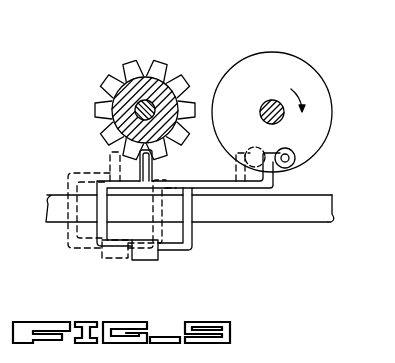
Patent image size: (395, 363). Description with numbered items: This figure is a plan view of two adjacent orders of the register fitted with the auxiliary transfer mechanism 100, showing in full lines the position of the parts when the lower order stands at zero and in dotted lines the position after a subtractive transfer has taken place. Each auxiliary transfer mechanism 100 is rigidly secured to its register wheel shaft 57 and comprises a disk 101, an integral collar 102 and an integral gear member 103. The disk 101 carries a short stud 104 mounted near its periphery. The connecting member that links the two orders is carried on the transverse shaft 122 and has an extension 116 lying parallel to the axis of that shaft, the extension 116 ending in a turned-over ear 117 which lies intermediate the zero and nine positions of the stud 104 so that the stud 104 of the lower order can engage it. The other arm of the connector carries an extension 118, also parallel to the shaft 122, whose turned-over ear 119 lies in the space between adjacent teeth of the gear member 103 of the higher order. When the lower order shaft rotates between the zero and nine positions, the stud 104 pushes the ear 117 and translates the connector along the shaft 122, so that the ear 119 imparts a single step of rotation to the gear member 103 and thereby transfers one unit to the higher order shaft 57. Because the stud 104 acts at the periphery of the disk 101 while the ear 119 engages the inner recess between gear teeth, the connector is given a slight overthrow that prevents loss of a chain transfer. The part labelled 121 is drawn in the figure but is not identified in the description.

The register wheel shaft 57 is at (145, 108).
The auxiliary transfer mechanism 100 is at (293, 96).
The disk 101 is at (258, 62).
The collar 102 is at (136, 95).
The gear member 103 is at (183, 83).
The stud 104 is at (295, 160).
The extension 116 is at (190, 225).
The turned-over ear 117 is at (275, 172).
The extension 118 is at (112, 180).
The turned-over ear 119 is at (151, 170).
The block 121 is at (132, 268).
The transverse shaft 122 is at (297, 220).